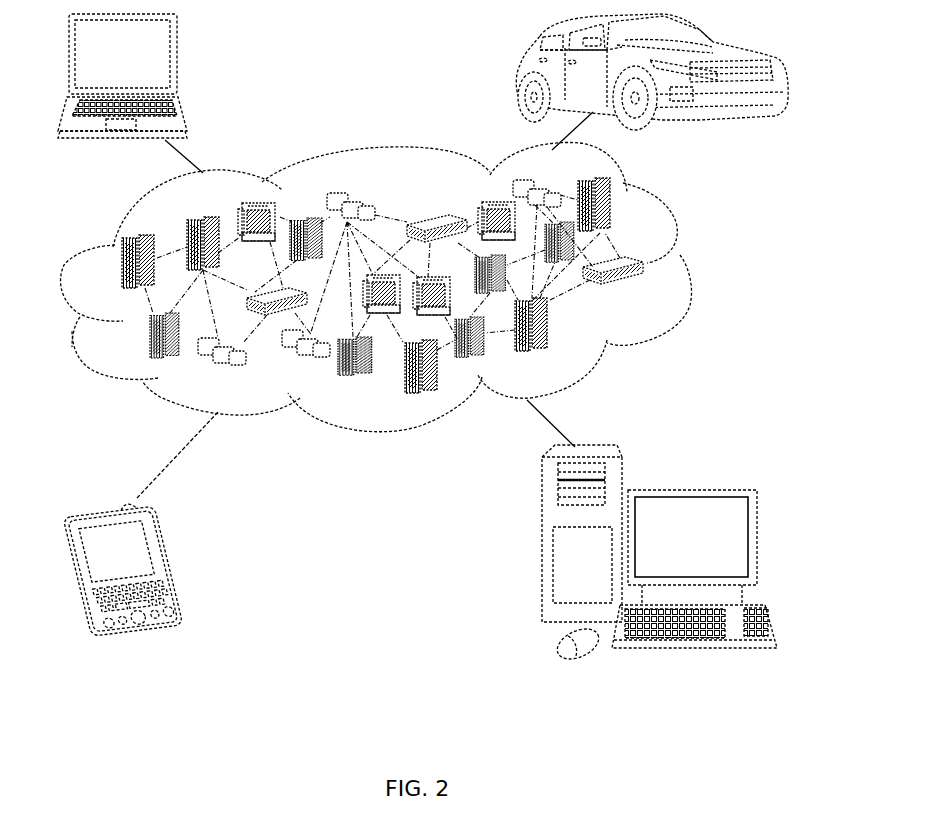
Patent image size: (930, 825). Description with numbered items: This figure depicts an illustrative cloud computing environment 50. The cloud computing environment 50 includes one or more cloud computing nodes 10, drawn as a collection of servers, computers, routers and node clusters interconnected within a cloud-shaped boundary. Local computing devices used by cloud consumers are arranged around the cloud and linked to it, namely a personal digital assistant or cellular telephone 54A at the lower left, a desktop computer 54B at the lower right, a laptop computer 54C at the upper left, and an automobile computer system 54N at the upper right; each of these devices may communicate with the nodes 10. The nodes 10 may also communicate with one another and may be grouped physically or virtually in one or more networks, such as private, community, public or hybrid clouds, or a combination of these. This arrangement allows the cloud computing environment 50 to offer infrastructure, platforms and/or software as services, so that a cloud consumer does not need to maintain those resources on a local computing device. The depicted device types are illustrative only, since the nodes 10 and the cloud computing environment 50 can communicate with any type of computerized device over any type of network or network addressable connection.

The cloud computing nodes 10 is at (652, 293).
The cloud computing environment 50 is at (688, 268).
The personal digital assistant or cellular telephone 54A is at (168, 563).
The desktop computer 54B is at (690, 488).
The laptop computer 54C is at (177, 62).
The automobile computer system 54N is at (517, 72).